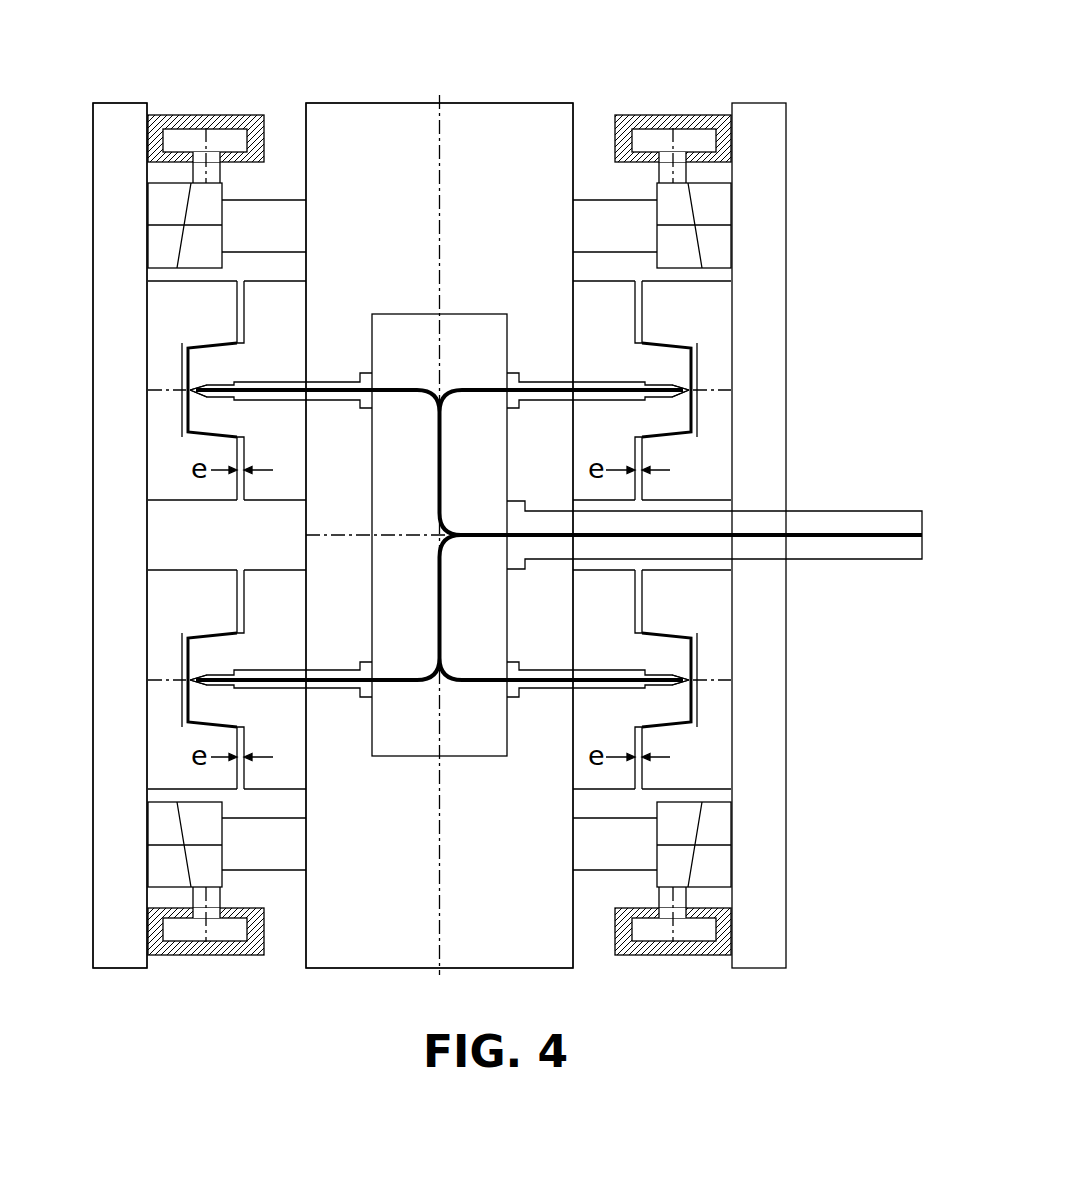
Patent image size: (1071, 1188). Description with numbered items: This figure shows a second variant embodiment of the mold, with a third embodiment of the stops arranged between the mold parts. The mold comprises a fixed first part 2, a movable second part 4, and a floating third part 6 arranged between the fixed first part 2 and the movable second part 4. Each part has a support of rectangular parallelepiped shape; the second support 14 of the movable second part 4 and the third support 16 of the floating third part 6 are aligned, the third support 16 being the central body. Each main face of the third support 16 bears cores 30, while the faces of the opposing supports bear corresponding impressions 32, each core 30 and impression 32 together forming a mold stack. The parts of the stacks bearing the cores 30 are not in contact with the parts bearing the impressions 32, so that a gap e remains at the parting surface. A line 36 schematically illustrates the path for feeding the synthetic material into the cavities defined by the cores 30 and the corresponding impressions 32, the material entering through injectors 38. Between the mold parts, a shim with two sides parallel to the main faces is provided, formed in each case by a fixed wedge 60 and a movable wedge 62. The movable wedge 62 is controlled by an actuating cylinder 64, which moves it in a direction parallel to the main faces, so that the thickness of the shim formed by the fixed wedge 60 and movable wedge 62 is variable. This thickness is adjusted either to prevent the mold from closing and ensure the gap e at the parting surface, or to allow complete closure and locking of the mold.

The fixed first part 2 is at (767, 75).
The movable second part 4 is at (112, 76).
The floating third part 6 is at (476, 76).
The second support 14 is at (118, 146).
The third support 16 is at (362, 122).
The core 30 is at (212, 412).
The impression 32 is at (184, 345).
The line 36 is at (472, 678).
The injector 38 is at (189, 391).
The fixed wedge 60 is at (165, 212).
The movable wedge 62 is at (202, 242).
The actuating cylinder 64 is at (180, 115).